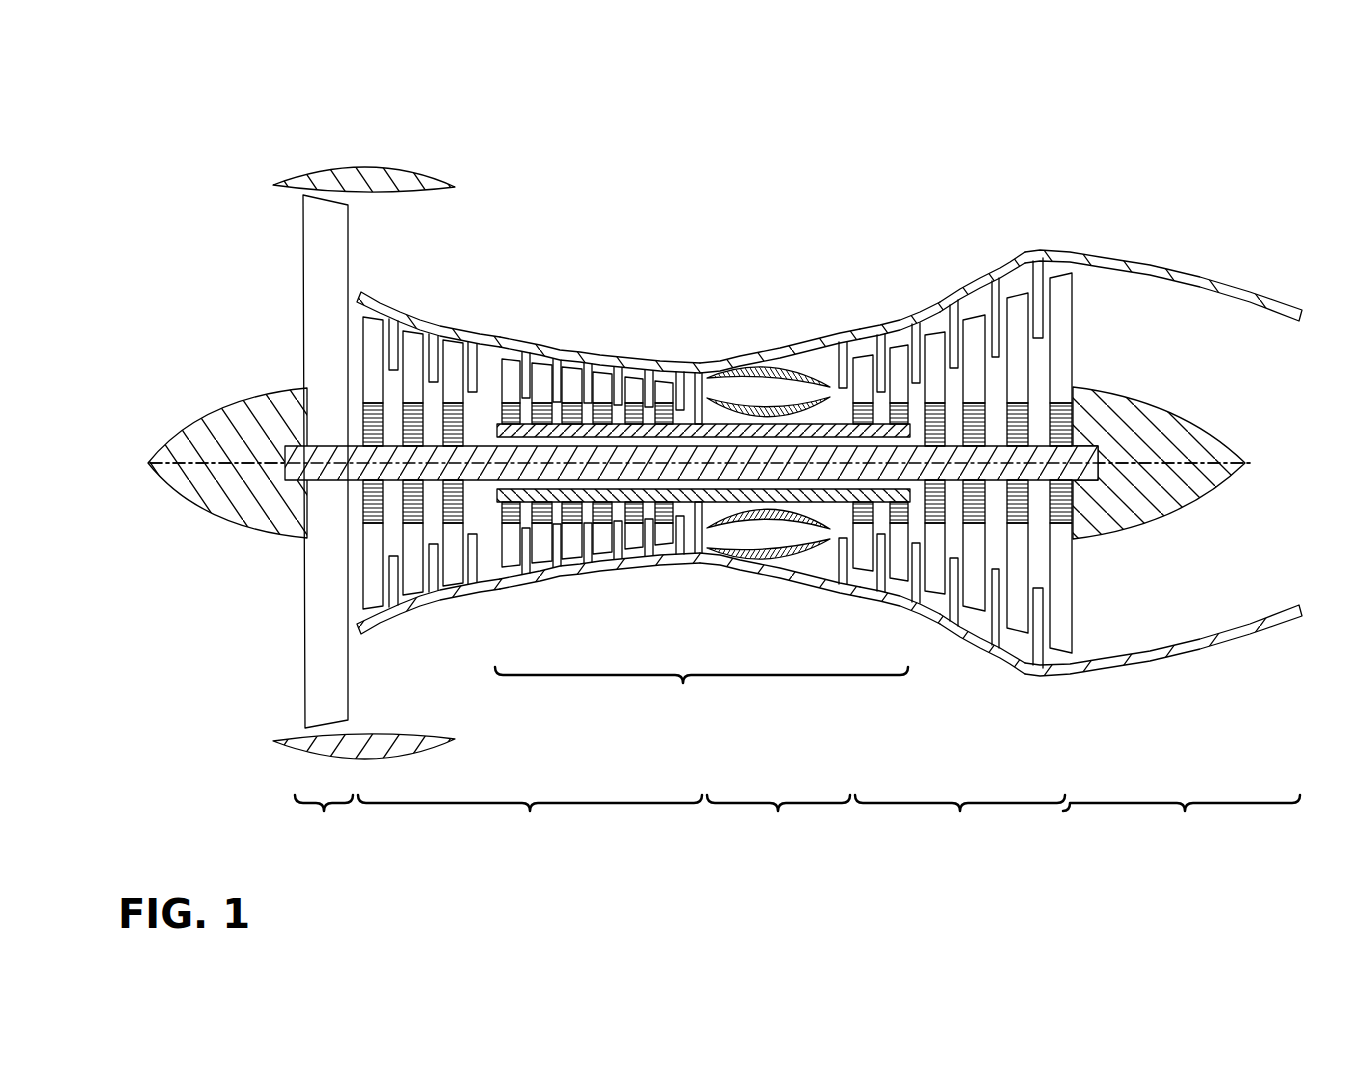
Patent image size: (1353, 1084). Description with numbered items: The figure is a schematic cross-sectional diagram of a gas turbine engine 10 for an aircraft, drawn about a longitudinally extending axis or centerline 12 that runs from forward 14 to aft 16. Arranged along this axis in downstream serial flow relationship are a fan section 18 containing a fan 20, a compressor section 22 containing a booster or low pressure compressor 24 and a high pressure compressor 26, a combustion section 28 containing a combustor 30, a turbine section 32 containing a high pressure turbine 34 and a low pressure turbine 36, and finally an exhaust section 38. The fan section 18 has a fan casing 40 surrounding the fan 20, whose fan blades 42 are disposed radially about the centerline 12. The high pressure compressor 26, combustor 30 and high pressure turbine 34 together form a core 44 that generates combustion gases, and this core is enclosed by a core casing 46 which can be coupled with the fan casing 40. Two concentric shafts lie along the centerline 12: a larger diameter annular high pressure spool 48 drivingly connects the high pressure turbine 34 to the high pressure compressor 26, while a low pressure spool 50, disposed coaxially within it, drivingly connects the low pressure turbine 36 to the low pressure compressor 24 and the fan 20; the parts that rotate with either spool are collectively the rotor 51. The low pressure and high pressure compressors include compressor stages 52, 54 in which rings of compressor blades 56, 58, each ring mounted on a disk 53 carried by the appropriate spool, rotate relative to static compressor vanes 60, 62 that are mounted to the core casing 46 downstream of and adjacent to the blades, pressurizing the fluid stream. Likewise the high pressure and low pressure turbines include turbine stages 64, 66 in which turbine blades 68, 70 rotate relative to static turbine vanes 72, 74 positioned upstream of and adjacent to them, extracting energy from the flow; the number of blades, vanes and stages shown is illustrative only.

The gas turbine engine 10 is at (170, 100).
The centerline 12 is at (207, 452).
The forward 14 is at (150, 463).
The aft 16 is at (1250, 463).
The fan section 18 is at (324, 819).
The fan 20 is at (283, 461).
The compressor section 22 is at (530, 819).
The low pressure compressor 24 is at (487, 603).
The high pressure compressor 26 is at (641, 578).
The combustion section 28 is at (778, 819).
The combustor 30 is at (821, 370).
The turbine section 32 is at (960, 819).
The high pressure turbine 34 is at (838, 598).
The low pressure turbine 36 is at (958, 641).
The exhaust section 38 is at (1163, 546).
The fan casing 40 is at (372, 163).
The fan blades 42 is at (318, 672).
The core 44 is at (701, 688).
The core casing 46 is at (750, 353).
The HP spool 48 is at (692, 378).
The LP spool 50 is at (487, 446).
The rotor 51 is at (626, 432).
The compressor stages 52 is at (358, 282).
The disk 53 is at (972, 418).
The compressor stages 54 is at (510, 324).
The compressor blades 56 is at (375, 323).
The compressor blades 58 is at (513, 368).
The static compressor vanes 60 is at (393, 332).
The static compressor vanes 62 is at (528, 378).
The turbine stages 64 is at (866, 326).
The turbine stages 66 is at (989, 270).
The turbine blades 68 is at (870, 372).
The turbine blades 70 is at (1016, 315).
The static turbine vanes 72 is at (882, 352).
The static turbine vanes 74 is at (996, 330).